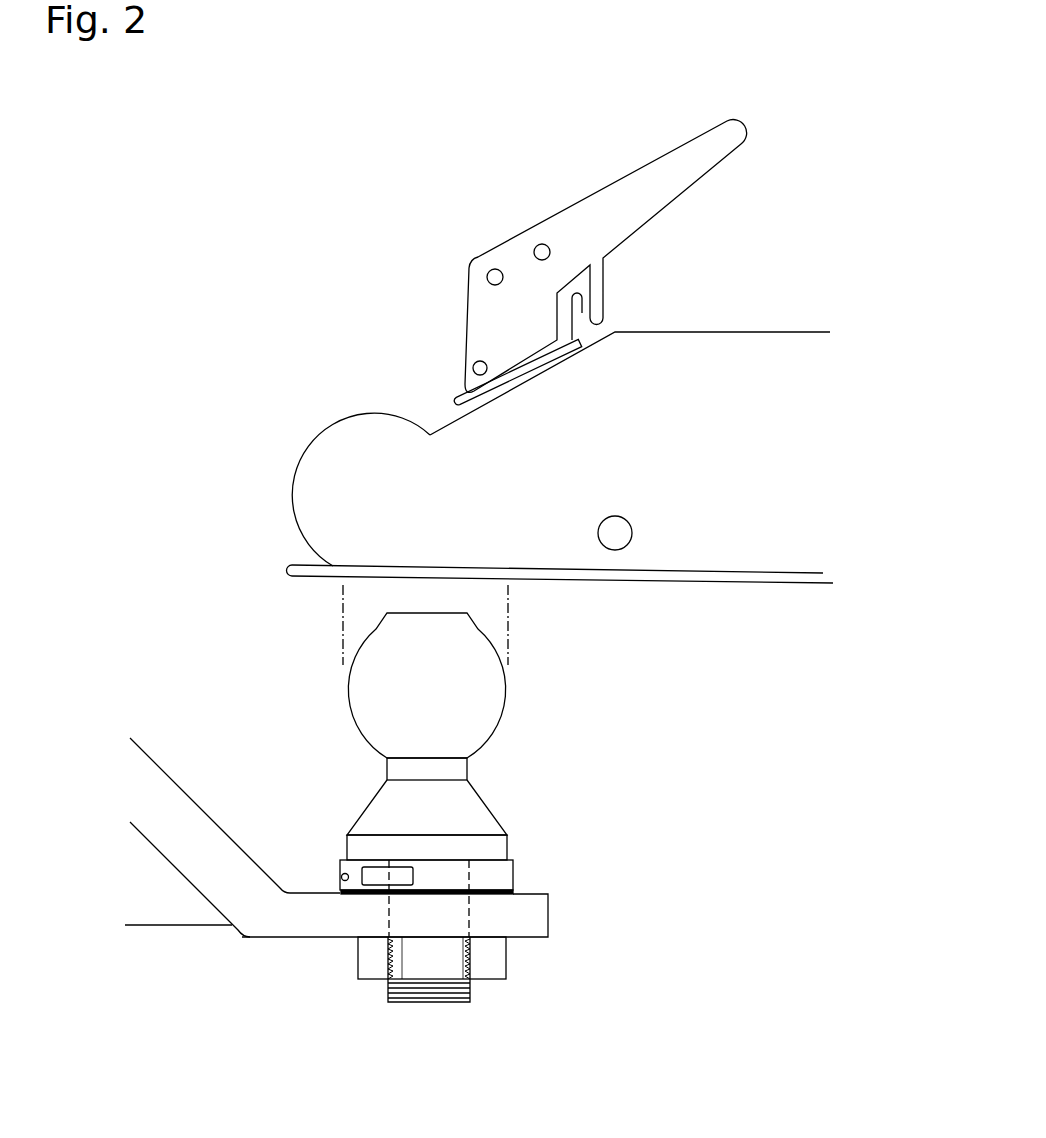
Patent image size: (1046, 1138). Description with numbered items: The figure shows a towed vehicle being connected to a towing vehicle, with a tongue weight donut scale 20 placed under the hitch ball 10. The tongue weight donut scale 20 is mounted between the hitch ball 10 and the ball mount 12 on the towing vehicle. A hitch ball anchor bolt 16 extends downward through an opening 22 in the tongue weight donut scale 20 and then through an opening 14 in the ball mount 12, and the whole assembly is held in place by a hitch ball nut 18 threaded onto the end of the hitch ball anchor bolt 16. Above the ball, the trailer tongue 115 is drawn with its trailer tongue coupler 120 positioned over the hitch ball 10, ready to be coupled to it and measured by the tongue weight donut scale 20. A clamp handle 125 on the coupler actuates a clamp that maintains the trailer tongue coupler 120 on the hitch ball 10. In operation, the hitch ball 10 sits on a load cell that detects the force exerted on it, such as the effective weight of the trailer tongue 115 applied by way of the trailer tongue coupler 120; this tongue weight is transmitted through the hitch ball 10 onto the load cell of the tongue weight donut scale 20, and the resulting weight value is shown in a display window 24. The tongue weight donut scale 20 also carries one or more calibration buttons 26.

The hitch ball 10 is at (463, 720).
The ball mount 12 is at (300, 918).
The opening 14 is at (470, 910).
The hitch ball anchor bolt 16 is at (425, 1001).
The hitch ball nut 18 is at (495, 960).
The tongue weight donut scale 20 is at (445, 844).
The opening 22 is at (472, 875).
The display window 24 is at (375, 873).
The calibration button 26 is at (342, 875).
The trailer tongue 115 is at (672, 476).
The trailer tongue coupler 120 is at (388, 483).
The clamp handle 125 is at (620, 205).